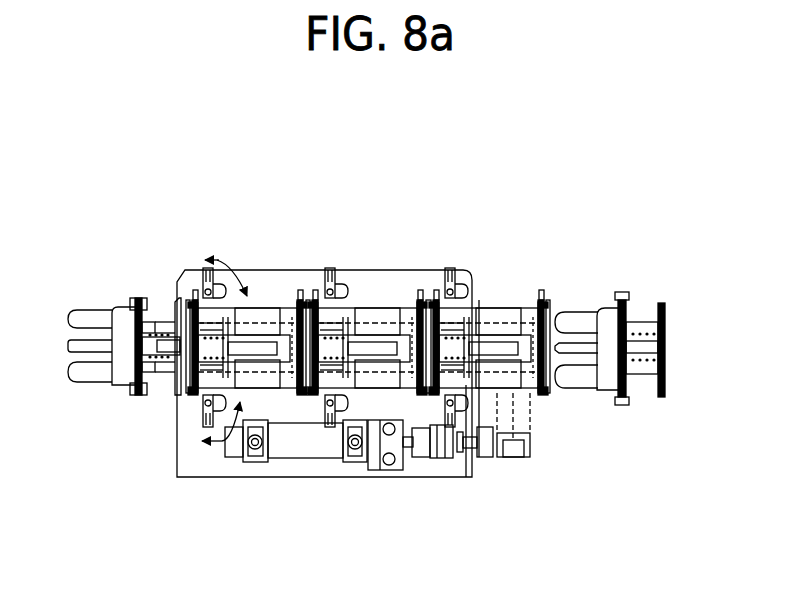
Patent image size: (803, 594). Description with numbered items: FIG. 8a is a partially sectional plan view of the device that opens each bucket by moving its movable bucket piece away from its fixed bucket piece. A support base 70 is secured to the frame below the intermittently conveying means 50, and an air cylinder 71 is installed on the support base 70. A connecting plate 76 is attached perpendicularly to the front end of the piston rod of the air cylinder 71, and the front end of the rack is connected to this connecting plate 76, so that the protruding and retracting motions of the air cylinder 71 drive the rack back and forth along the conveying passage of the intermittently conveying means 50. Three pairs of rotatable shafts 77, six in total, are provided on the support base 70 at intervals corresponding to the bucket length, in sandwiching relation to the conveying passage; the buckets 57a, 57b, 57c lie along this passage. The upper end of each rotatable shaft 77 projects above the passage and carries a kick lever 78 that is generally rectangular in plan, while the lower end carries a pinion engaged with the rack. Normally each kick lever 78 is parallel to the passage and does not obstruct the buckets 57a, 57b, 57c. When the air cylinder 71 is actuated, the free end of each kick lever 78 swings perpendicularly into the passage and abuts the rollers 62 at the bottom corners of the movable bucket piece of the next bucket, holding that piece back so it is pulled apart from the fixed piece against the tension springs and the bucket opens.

The intermittently conveying means 50 is at (560, 302).
The bucket 57a is at (525, 296).
The bucket 57b is at (388, 296).
The bucket 57c is at (265, 296).
The rollers 62 is at (316, 298).
The support base 70 is at (463, 470).
The air cylinder 71 is at (280, 452).
The connecting plate 76 is at (487, 415).
The rotatable shafts 77 is at (205, 292).
The kick lever 78 is at (203, 290).